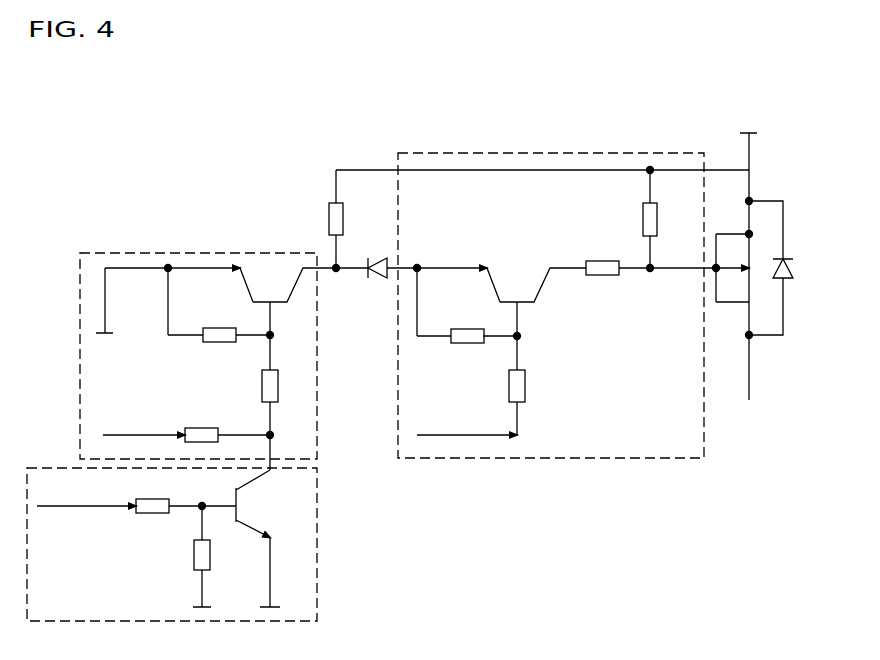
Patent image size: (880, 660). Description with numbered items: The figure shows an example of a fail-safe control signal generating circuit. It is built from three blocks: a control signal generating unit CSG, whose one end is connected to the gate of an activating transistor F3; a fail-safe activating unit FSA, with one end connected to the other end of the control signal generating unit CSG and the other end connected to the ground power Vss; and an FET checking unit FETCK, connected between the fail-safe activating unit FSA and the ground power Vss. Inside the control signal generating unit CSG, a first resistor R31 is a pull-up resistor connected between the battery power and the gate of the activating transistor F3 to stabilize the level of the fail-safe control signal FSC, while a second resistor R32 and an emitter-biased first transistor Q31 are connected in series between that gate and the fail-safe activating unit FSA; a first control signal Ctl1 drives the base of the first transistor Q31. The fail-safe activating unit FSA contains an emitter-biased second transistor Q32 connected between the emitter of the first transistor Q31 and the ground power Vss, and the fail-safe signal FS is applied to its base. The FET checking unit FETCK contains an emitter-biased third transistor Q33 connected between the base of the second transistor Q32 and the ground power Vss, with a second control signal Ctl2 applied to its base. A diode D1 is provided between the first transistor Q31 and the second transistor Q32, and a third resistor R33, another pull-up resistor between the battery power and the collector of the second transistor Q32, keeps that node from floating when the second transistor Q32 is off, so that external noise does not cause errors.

The fail-safe activating unit FSA is at (198, 252).
The control signal generating unit CSG is at (548, 153).
The FET checking unit FETCK is at (317, 545).
The first transistor Q31 is at (501, 278).
The second transistor Q32 is at (252, 278).
The third transistor Q33 is at (266, 538).
The first resistor R31 is at (669, 219).
The second resistor R32 is at (649, 252).
The third resistor R33 is at (355, 219).
The diode D1 is at (376, 256).
The activating transistor F3 is at (783, 268).
The fail-safe control signal FSC is at (707, 268).
The fail-safe signal FS is at (186, 422).
The first control signal Ctl1 is at (467, 419).
The second control signal Ctl2 is at (136, 540).
The ground power Vss is at (104, 315).